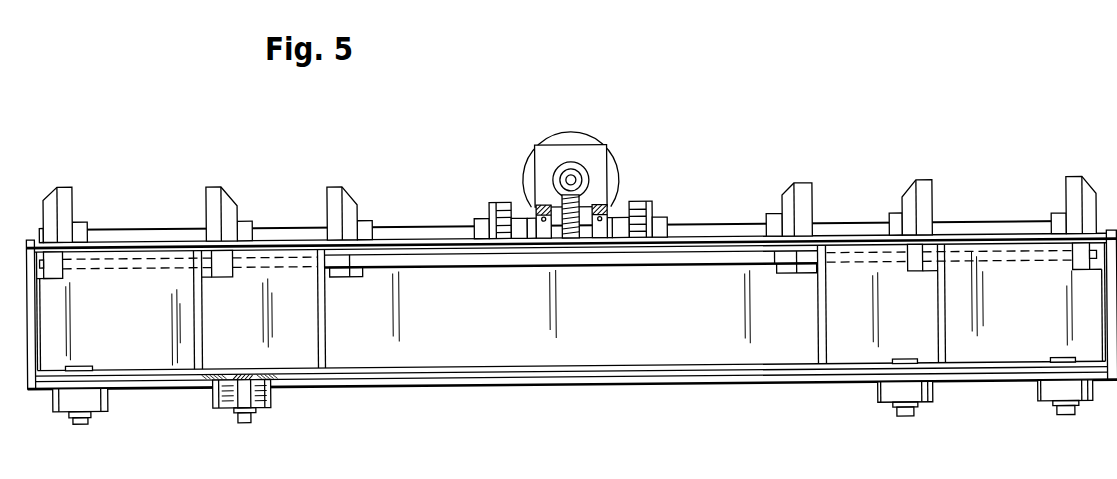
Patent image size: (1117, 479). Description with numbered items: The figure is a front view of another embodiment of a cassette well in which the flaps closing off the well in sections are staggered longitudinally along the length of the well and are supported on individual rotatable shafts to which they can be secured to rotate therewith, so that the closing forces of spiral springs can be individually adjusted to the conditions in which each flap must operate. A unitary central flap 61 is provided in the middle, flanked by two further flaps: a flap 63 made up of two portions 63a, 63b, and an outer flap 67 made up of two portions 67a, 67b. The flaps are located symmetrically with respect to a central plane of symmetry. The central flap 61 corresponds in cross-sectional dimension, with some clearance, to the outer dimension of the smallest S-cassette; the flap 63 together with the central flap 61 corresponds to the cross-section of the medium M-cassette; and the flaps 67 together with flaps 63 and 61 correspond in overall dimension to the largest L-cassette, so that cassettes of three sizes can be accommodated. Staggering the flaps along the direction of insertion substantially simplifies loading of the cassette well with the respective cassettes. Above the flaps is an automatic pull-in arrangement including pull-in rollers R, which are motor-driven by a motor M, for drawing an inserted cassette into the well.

The pull-in rollers R is at (73, 193).
The motor M is at (620, 173).
The central flap 61 is at (640, 346).
The flap 63 is at (306, 352).
The flap portion 63a is at (258, 326).
The flap portion 63b is at (928, 325).
The flap 67 is at (137, 354).
The flap portion 67a is at (137, 325).
The flap portion 67b is at (1040, 326).